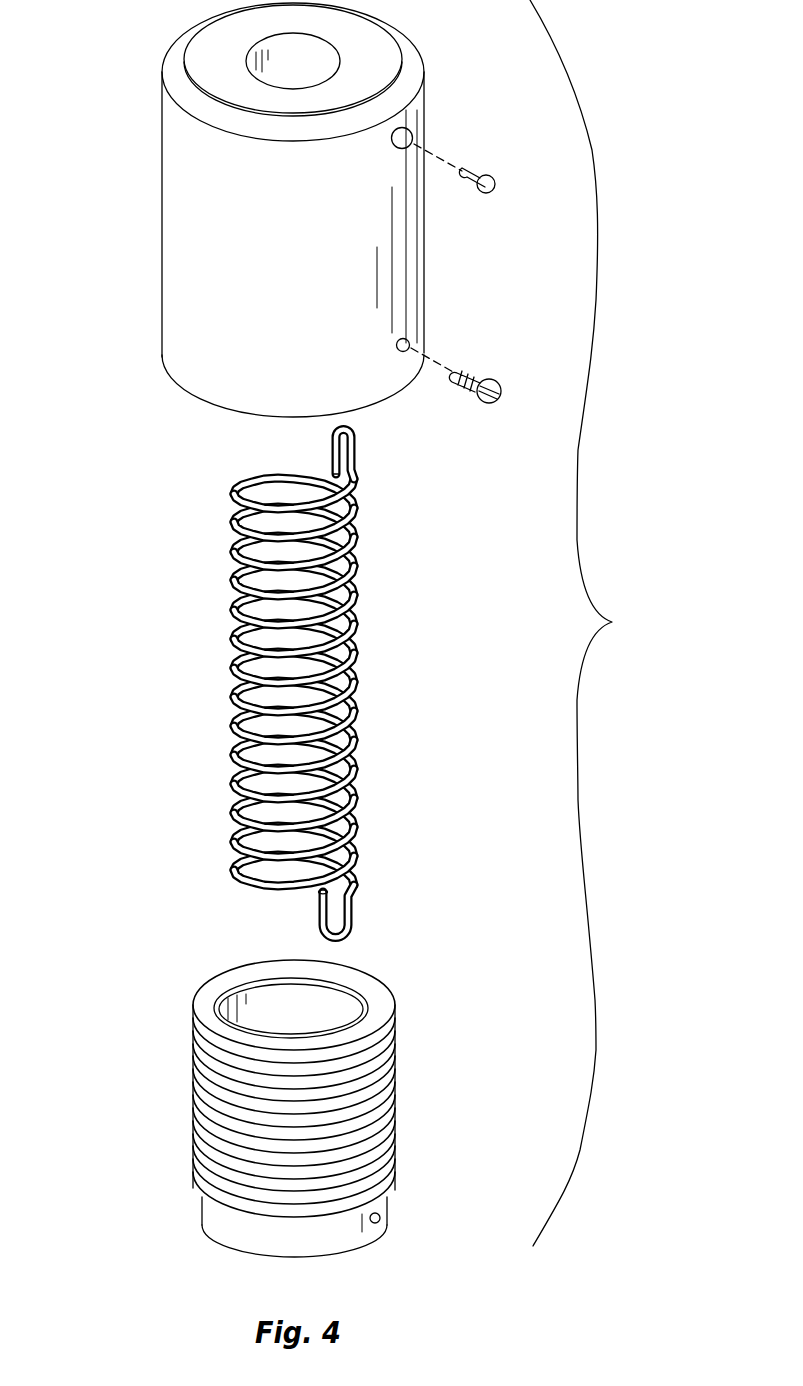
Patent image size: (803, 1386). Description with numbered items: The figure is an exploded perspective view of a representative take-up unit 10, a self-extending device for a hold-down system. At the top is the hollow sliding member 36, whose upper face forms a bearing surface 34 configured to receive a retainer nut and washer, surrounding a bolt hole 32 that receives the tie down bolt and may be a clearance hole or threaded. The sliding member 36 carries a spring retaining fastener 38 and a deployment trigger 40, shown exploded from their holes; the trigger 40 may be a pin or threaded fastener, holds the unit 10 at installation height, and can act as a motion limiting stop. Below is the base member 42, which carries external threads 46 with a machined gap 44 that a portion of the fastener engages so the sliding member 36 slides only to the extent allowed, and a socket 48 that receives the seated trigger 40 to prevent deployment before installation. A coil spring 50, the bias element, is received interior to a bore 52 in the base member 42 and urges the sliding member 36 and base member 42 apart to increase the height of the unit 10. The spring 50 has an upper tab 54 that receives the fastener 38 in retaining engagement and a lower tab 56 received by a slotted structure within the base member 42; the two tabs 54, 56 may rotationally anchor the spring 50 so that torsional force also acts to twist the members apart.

The take-up unit 10 is at (591, 623).
The bolt hole 32 is at (293, 61).
The bearing surface 34 is at (365, 52).
The sliding member 36 is at (185, 223).
The spring retaining fastener 38 is at (473, 173).
The deployment trigger 40 is at (477, 373).
The base member 42 is at (228, 1233).
The gap 44 is at (238, 1152).
The threads 46 is at (398, 1165).
The socket 48 is at (383, 1216).
The coil spring 50 is at (232, 664).
The bore 52 is at (291, 1008).
The tab 54 is at (356, 445).
The tab 56 is at (353, 908).